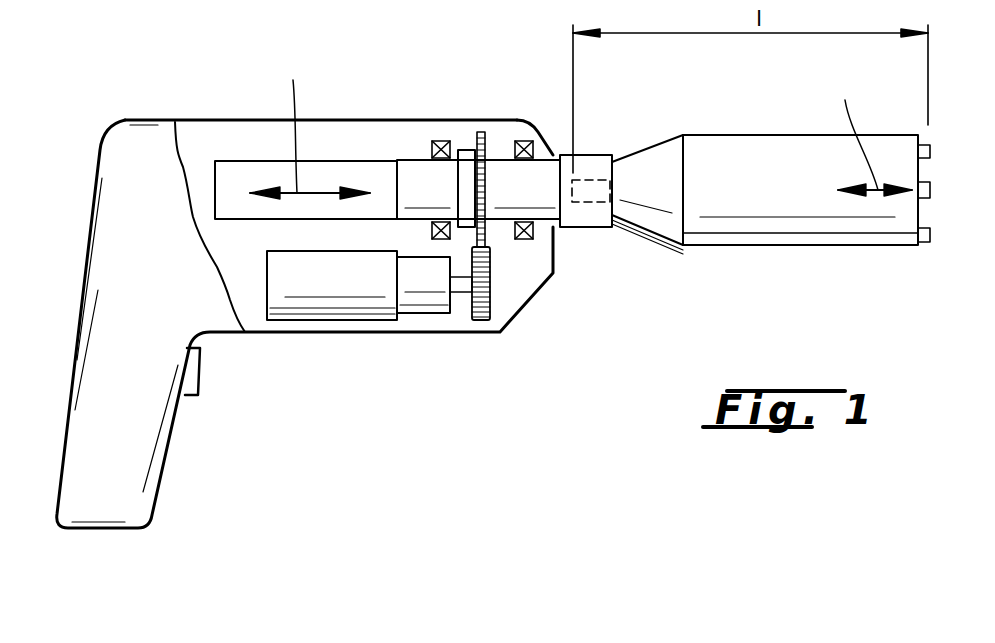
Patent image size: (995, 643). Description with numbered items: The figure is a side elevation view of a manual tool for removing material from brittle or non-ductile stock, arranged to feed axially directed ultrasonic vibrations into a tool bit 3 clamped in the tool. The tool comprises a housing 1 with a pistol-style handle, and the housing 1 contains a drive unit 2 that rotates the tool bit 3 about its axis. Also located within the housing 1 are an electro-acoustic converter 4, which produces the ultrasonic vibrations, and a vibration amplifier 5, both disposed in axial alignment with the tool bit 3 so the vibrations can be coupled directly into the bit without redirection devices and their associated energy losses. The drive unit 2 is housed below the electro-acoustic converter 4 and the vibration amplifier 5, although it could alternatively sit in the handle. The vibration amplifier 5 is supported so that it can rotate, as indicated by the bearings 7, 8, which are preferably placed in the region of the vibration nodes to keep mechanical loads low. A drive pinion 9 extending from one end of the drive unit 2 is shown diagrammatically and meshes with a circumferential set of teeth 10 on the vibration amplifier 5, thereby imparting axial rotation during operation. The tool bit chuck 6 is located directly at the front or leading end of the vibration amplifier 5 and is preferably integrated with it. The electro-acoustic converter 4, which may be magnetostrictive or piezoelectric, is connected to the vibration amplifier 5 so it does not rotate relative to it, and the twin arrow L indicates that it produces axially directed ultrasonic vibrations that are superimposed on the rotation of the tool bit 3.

The housing 1 is at (248, 120).
The drive unit 2 is at (285, 282).
The tool bit 3 is at (748, 165).
The electro-acoustic converter 4 is at (365, 175).
The vibration amplifier 5 is at (413, 180).
The tool bit chuck 6 is at (583, 215).
The bearing 7 is at (526, 118).
The bearing 8 is at (440, 141).
The drive pinion 9 is at (490, 298).
The circumferential set of teeth 10 is at (478, 132).